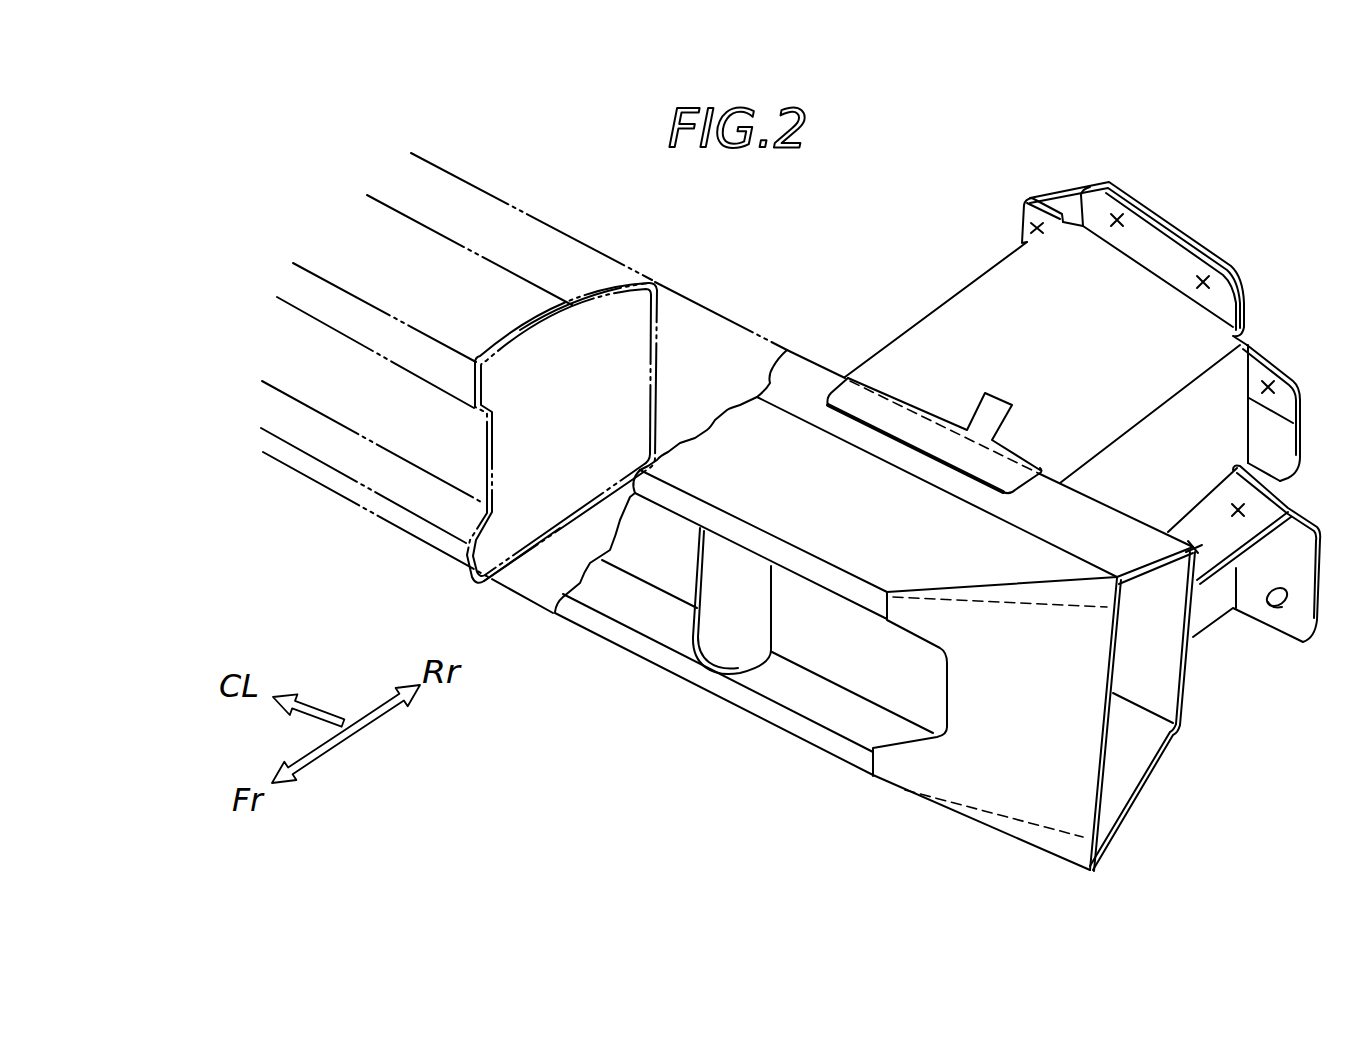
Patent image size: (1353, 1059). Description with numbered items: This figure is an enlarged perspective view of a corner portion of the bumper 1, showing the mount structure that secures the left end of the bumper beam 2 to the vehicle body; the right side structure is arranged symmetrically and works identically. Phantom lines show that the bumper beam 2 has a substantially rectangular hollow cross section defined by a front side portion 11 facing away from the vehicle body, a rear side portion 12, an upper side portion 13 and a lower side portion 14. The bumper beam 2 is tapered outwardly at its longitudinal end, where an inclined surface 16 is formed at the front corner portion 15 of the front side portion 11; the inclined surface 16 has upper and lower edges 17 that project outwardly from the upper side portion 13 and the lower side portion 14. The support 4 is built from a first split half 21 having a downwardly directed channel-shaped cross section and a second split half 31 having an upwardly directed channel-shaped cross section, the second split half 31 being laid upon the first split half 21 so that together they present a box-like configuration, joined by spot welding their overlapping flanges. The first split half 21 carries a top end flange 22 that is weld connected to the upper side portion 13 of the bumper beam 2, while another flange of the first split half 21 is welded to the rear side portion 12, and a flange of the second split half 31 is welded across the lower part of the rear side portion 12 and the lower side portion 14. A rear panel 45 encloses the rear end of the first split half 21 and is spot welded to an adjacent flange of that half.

The bumper 1 is at (883, 623).
The bumper beam 2 is at (627, 663).
The support 4 is at (1091, 330).
The front side portion 11 is at (485, 485).
The rear side portion 12 is at (601, 430).
The upper side portion 13 is at (550, 315).
The lower side portion 14 is at (538, 553).
The front corner portion 15 is at (983, 826).
The inclined surface 16 is at (1063, 745).
The upper and lower edges 17 is at (1123, 590).
The first split half 21 is at (953, 323).
The top end flange 22 is at (840, 395).
The second split half 31 is at (1210, 613).
The rear panel 45 is at (1263, 322).